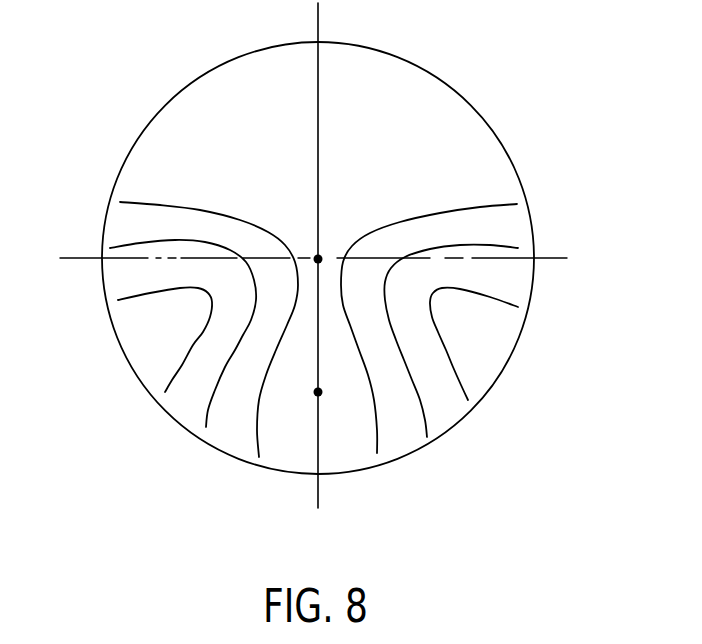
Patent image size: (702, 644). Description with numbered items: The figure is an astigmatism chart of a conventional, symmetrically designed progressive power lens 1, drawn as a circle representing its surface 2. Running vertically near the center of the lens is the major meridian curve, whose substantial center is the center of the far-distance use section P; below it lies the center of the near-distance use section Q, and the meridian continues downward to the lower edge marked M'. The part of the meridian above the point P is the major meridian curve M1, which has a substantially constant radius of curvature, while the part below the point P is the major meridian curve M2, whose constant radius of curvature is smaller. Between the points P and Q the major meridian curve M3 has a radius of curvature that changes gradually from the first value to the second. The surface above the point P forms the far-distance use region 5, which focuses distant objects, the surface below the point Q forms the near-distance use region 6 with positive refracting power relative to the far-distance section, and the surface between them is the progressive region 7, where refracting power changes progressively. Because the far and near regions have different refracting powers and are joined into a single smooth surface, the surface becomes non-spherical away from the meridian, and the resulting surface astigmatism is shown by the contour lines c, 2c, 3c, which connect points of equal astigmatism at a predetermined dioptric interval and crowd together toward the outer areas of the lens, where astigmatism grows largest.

The progressive power lens 1 is at (481, 79).
The surface 2 is at (518, 136).
The far-distance use region 5 is at (217, 87).
The near-distance use region 6 is at (350, 448).
The progressive region 7 is at (308, 280).
The contour line c is at (317, 320).
The contour line 2c is at (319, 332).
The contour line 3c is at (320, 343).
The major meridian curve M1 is at (319, 167).
The major meridian curve M2 is at (316, 414).
The major meridian curve M3 is at (318, 321).
The center of the far-distance use section P is at (321, 256).
The center of the near-distance use section Q is at (318, 392).
The principal meridian axis M' is at (321, 507).